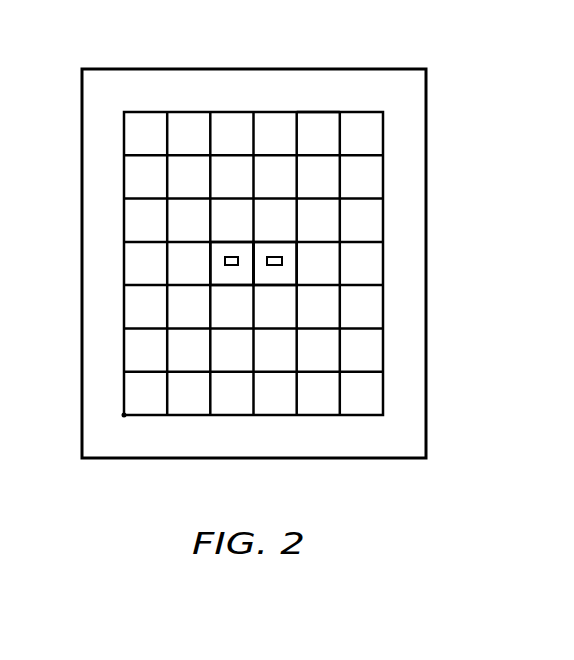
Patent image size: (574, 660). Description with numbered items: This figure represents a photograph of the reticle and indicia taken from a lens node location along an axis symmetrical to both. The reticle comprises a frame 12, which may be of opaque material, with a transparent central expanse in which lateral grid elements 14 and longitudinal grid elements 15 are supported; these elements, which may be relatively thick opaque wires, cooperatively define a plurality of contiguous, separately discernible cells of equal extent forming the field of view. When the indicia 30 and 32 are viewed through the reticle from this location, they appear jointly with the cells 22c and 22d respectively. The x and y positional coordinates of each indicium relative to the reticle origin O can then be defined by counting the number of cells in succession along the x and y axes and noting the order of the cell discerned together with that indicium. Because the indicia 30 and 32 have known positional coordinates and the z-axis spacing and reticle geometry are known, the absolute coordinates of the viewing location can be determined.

The frame 12 is at (420, 98).
The lateral grid elements 14 is at (358, 155).
The longitudinal grid elements 15 is at (337, 137).
The indicium 30 is at (230, 255).
The indicium 32 is at (272, 255).
The cell 22c is at (229, 278).
The cell 22d is at (282, 277).
The reticle origin O is at (122, 415).